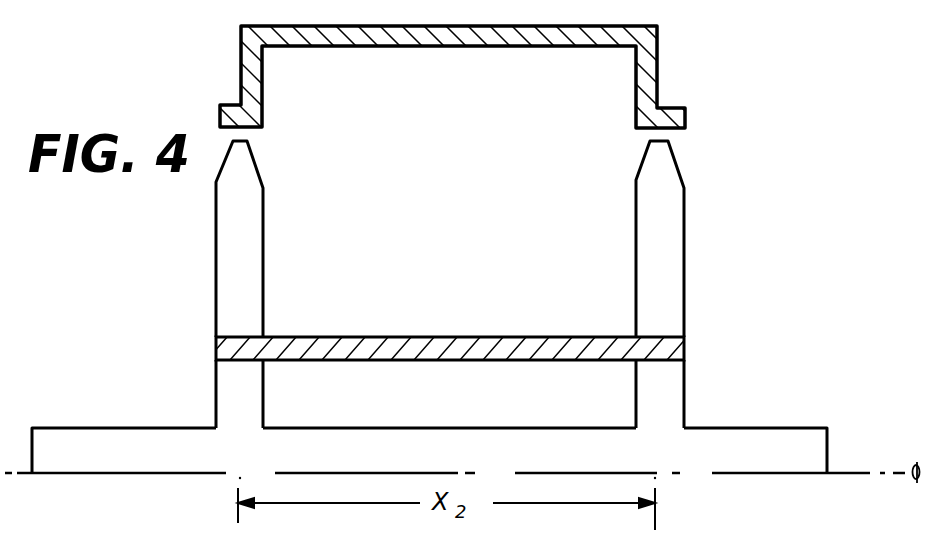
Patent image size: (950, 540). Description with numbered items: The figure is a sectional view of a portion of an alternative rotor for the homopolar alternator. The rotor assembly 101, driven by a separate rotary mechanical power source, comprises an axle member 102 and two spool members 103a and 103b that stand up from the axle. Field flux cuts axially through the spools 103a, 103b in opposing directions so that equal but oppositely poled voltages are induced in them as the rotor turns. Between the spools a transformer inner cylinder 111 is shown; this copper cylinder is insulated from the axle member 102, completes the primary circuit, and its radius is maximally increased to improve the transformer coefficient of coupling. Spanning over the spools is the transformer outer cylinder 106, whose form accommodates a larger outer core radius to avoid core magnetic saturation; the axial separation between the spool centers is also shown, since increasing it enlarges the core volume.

The transformer outer cylinder 106 is at (657, 78).
The spool member 103a is at (228, 311).
The spool member 103b is at (665, 282).
The transformer inner cylinder 111 is at (685, 348).
The rotor assembly 101 is at (762, 428).
The axle member 102 is at (480, 461).